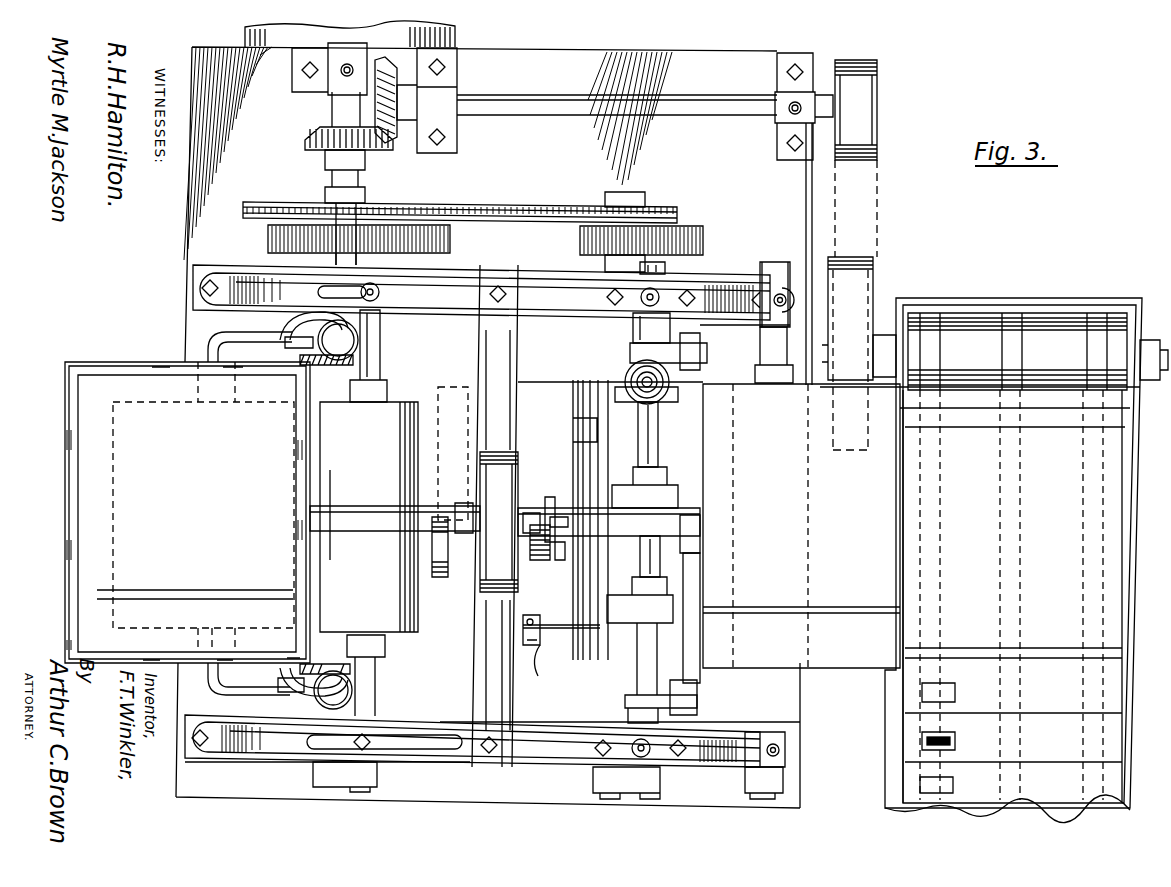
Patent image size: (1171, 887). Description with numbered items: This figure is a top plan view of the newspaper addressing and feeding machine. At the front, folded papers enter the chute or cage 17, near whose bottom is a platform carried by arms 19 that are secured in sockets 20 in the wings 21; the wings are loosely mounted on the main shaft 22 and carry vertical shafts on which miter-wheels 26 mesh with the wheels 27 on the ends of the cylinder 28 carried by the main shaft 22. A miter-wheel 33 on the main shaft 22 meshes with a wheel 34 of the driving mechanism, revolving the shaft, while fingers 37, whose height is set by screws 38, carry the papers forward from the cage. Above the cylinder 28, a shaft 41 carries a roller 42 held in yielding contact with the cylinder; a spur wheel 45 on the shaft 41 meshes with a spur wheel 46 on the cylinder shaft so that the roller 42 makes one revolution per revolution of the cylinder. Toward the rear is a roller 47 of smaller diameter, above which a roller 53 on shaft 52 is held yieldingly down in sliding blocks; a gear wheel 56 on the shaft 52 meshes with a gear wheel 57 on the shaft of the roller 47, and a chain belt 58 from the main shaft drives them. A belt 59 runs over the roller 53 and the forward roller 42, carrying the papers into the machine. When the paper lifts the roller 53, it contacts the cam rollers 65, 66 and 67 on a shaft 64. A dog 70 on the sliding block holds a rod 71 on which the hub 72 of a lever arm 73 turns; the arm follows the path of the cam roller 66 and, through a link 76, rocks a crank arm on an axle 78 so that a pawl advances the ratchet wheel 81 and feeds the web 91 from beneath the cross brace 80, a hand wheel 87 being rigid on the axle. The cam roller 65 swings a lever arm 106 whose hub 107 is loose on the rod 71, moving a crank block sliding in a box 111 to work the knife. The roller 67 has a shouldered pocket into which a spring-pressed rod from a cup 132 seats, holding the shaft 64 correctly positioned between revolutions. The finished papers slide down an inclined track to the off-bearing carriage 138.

The chute or cage 17 is at (160, 362).
The arms 19 is at (240, 346).
The sockets 20 is at (290, 348).
The wings 21 is at (302, 340).
The main shaft 22 is at (336, 259).
The miter-wheels 26 is at (352, 681).
The wheels 27 is at (380, 673).
The cylinder 28 is at (453, 386).
The miter-wheel 33 is at (307, 143).
The wheel 34 is at (394, 140).
The fingers 37 is at (290, 323).
The screws 38 is at (340, 341).
The shaft 41 is at (381, 328).
The roller 42 is at (365, 597).
The spur wheel 45 is at (447, 237).
The spur wheel 46 is at (352, 238).
The roller 47 is at (577, 469).
The shaft 52 is at (620, 330).
The roller 53 is at (638, 434).
The gear wheel 56 is at (637, 233).
The gear wheel 57 is at (580, 243).
The chain belt 58 is at (538, 211).
The belt 59 is at (395, 518).
The shaft 64 is at (643, 553).
The cam roller 65 is at (620, 594).
The cam roller 66 is at (627, 487).
The roller 67 is at (618, 401).
The dog 70 is at (702, 351).
The rod 71 is at (698, 568).
The hub 72 is at (698, 523).
The lever arm 73 is at (587, 513).
The link 76 is at (558, 500).
The axle 78 is at (562, 560).
The cross brace 80 is at (516, 341).
The ratchet wheel 81 is at (529, 548).
The hand wheel 87 is at (440, 577).
The web 91 is at (499, 522).
The lever arm 106 is at (548, 622).
The hub 107 is at (688, 633).
The box 111 is at (538, 672).
The cup 132 is at (672, 394).
The off-bearing carriage 138 is at (1017, 423).